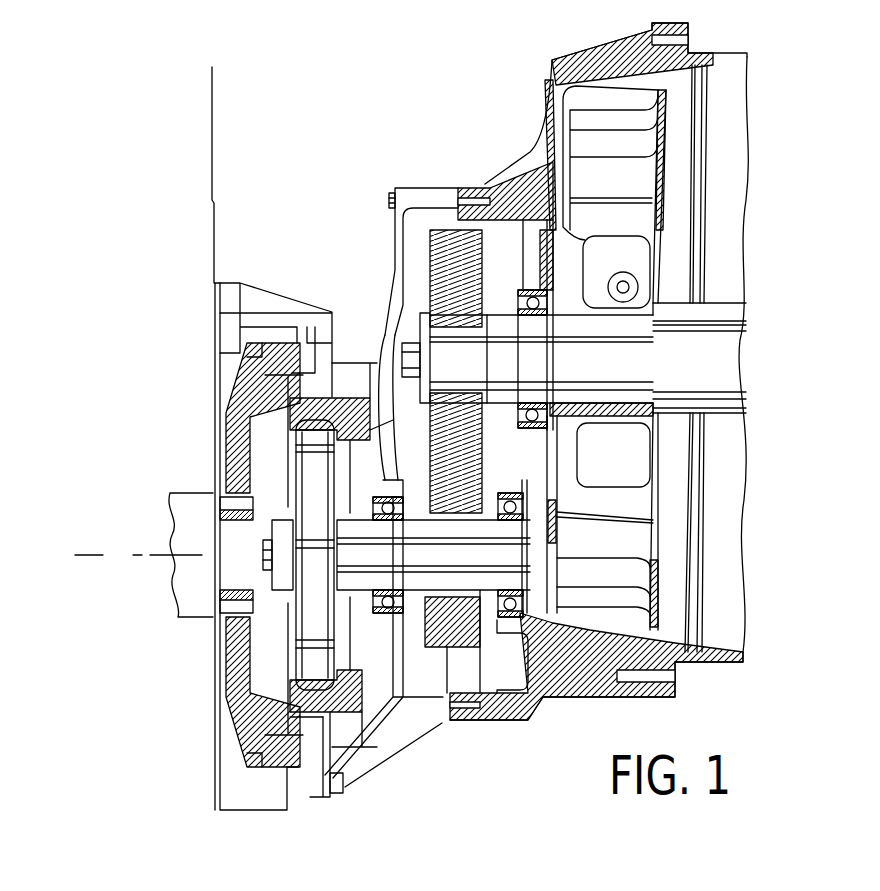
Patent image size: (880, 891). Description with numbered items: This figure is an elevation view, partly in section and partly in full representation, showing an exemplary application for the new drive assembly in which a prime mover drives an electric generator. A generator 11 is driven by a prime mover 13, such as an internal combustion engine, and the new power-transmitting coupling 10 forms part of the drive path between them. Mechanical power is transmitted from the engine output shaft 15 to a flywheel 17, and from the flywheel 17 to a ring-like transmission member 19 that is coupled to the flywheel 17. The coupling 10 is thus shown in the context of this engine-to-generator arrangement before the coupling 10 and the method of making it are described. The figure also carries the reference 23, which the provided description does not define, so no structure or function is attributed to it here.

The power-transmitting coupling 10 is at (305, 615).
The generator 11 is at (716, 68).
The prime mover 13 is at (218, 231).
The engine output shaft 15 is at (198, 500).
The flywheel 17 is at (238, 703).
The ring-like transmission member 19 is at (307, 710).
The axis of rotation 23 is at (105, 555).